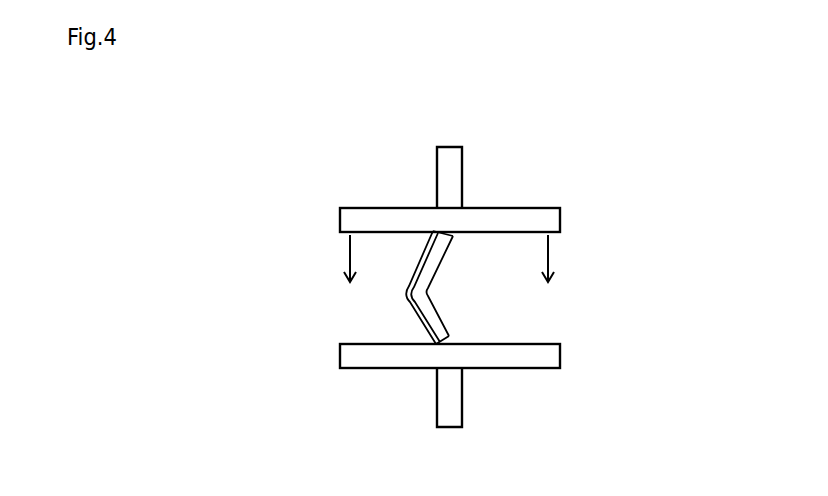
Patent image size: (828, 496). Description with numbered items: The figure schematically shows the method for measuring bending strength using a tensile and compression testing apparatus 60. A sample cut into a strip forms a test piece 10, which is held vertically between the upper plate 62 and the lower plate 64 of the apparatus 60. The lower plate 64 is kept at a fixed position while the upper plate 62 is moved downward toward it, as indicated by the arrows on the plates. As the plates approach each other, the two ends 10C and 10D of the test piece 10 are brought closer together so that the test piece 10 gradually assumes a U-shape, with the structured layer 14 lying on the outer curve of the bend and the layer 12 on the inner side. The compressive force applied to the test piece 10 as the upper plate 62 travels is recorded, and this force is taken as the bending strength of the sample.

The apparatus 60 is at (488, 267).
The upper plate 62 is at (560, 220).
The lower plate 64 is at (560, 355).
The test piece 10 is at (457, 286).
The end of the test piece 10C is at (451, 235).
The end of the test piece 10D is at (445, 344).
The inner layer of clad material 12 is at (423, 306).
The structured layer 14 is at (412, 312).